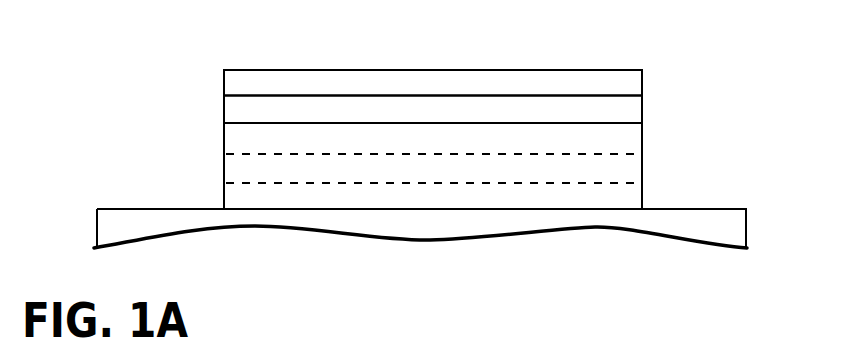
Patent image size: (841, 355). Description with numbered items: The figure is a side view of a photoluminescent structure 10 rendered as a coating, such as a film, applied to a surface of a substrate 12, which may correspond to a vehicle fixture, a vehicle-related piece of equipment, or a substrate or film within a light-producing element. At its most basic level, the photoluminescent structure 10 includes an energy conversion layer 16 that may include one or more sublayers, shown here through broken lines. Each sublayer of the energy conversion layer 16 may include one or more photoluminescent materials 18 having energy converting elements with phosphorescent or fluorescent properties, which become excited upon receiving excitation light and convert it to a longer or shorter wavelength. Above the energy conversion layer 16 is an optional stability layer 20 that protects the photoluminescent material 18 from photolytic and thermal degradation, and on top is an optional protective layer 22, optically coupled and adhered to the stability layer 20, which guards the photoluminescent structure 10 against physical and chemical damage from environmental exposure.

The photoluminescent structure 10 is at (578, 44).
The substrate 12 is at (688, 208).
The energy conversion layer 16 is at (224, 165).
The photoluminescent material 18 is at (595, 168).
The stability layer 20 is at (224, 110).
The protective layer 22 is at (316, 69).